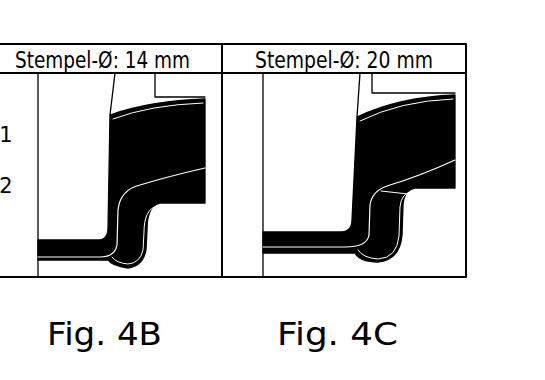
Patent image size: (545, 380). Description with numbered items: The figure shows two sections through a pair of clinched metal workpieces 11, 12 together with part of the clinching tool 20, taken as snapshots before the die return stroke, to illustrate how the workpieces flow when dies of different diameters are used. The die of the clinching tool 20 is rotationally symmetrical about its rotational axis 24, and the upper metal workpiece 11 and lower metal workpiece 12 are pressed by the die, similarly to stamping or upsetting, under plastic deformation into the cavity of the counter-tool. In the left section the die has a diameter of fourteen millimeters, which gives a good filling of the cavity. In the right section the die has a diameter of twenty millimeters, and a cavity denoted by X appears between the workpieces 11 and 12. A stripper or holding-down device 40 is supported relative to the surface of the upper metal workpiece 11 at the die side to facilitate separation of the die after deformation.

In FIG. 4B, the upper metal workpiece 11 is at (202, 144).
In FIG. 4C, the upper metal workpiece 11 is at (450, 118).
In FIG. 4B, the lower metal workpiece 12 is at (195, 193).
In FIG. 4C, the lower metal workpiece 12 is at (449, 180).
In FIG. 4B, the clinching tool 20 is at (75, 139).
In FIG. 4C, the clinching tool 20 is at (318, 141).
In FIG. 4B, the rotational axis 24 is at (38, 96).
In FIG. 4C, the rotational axis 24 is at (263, 99).
In FIG. 4C, the stripper or holding-down device 40 is at (448, 83).
In FIG. 4C, the cavity between workpieces X is at (381, 191).